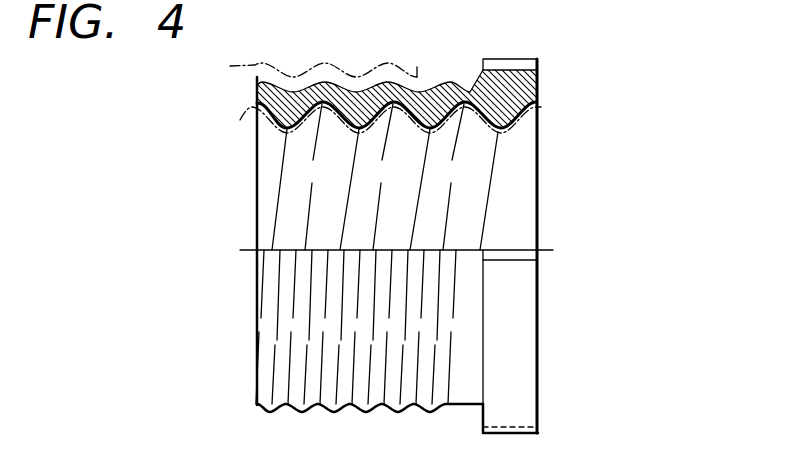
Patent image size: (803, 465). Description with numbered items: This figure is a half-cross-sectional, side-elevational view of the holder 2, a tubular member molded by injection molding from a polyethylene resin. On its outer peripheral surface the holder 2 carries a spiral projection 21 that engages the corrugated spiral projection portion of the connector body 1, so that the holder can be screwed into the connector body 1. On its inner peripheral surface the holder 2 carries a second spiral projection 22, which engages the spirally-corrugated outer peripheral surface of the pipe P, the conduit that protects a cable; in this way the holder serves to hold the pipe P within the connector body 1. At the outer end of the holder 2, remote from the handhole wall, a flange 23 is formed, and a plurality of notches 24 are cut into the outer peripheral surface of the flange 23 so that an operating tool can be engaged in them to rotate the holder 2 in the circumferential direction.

The connector body 1 is at (256, 82).
The pipe P is at (252, 107).
The holder 2 is at (537, 430).
The spiral projection 21 is at (292, 302).
The spiral projection 22 is at (284, 126).
The flange 23 is at (530, 322).
The notches 24 is at (537, 65).